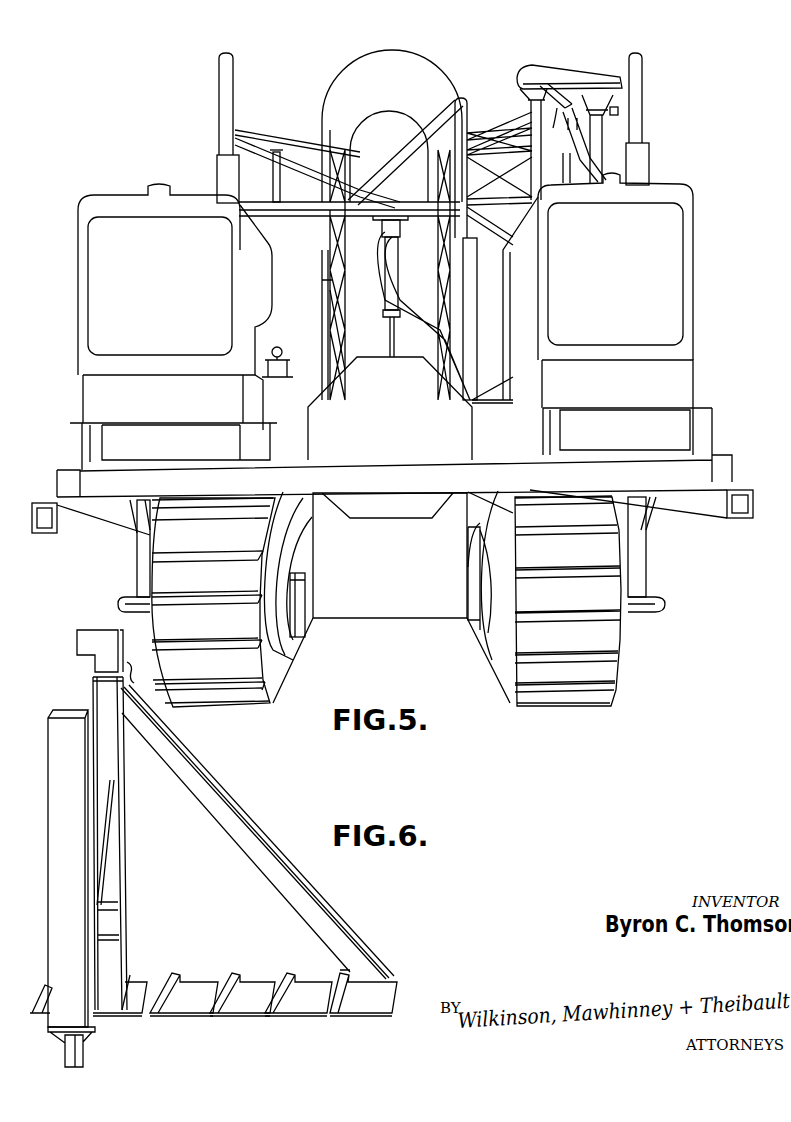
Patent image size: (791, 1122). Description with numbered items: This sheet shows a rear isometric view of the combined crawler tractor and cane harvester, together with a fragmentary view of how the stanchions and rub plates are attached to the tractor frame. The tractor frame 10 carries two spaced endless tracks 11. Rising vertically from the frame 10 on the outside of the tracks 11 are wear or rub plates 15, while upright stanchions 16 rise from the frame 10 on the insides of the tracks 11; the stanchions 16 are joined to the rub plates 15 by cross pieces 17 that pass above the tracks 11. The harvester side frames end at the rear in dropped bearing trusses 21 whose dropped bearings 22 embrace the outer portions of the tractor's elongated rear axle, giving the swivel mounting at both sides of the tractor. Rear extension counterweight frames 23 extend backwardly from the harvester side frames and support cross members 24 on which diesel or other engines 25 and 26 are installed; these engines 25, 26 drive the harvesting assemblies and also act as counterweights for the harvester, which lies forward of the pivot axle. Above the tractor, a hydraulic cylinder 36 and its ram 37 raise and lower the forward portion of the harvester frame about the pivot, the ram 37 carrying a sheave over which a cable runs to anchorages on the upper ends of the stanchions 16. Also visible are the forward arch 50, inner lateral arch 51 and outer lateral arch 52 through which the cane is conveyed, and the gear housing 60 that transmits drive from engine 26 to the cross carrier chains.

In FIG. 5, the tractor frame 10 is at (407, 612).
In FIG. 5, the endless tracks 11 is at (250, 690).
In FIG. 6, the endless tracks 11 is at (264, 960).
In FIG. 6, the rub plates 15 is at (48, 857).
In FIG. 5, the upright stanchions 16 is at (326, 280).
In FIG. 6, the upright stanchions 16 is at (124, 820).
In FIG. 6, the cross pieces 17 is at (113, 915).
In FIG. 5, the dropped bearing trusses 21 is at (138, 555).
In FIG. 5, the dropped bearings 22 is at (125, 602).
In FIG. 5, the rear extension counterweight frames 23 is at (48, 520).
In FIG. 5, the cross members 24 is at (410, 468).
In FIG. 5, the engine 25 is at (85, 275).
In FIG. 5, the engine 26 is at (690, 283).
In FIG. 5, the hydraulic cylinder 36 is at (388, 278).
In FIG. 5, the ram 37 is at (392, 333).
In FIG. 5, the forward arch 50 is at (401, 60).
In FIG. 5, the inner lateral arch 51 is at (463, 100).
In FIG. 5, the outer lateral arch 52 is at (570, 92).
In FIG. 5, the gear housing 60 is at (566, 70).